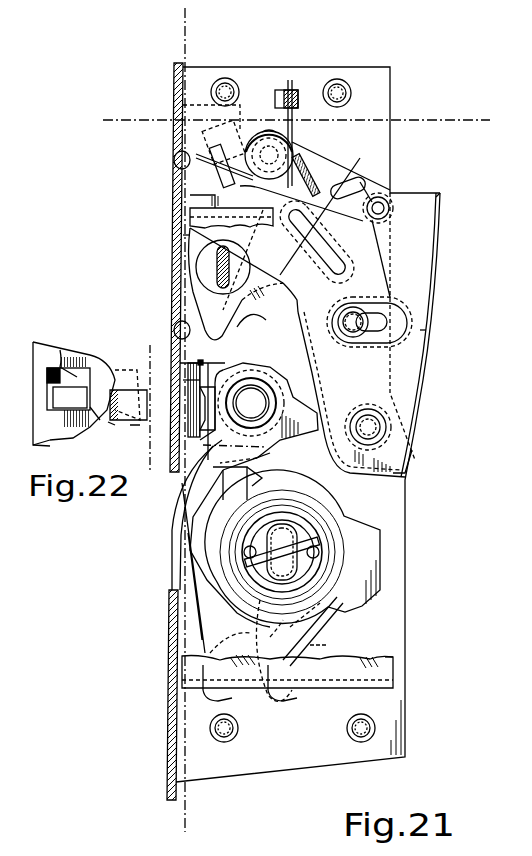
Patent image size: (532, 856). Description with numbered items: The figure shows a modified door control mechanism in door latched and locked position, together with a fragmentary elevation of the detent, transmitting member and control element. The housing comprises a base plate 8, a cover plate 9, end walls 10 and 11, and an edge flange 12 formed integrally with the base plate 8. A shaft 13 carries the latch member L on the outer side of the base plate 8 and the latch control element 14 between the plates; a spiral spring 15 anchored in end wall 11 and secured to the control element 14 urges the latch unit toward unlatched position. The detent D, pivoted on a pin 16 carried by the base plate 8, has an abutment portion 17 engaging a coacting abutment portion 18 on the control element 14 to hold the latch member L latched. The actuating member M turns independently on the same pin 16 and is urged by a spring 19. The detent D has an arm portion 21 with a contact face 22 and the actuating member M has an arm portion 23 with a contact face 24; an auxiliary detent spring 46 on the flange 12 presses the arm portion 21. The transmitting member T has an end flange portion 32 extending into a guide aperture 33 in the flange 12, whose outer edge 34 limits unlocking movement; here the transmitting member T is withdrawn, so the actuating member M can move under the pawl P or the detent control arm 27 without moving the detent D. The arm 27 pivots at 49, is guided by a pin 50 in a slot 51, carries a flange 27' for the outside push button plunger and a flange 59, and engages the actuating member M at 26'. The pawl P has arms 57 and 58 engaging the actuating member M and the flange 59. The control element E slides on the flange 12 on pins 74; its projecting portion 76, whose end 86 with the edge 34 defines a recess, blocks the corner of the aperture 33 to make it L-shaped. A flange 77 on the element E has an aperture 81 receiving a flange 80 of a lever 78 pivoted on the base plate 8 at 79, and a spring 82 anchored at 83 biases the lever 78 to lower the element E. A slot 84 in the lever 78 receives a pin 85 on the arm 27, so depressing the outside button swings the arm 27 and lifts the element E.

In FIG. 21, the base plate 8 is at (372, 78).
In FIG. 22, the base plate 8 is at (33, 352).
In FIG. 21, the cover plate 9 is at (388, 660).
In FIG. 21, the end wall 10 is at (231, 209).
In FIG. 21, the end wall 11 is at (332, 690).
In FIG. 21, the edge wall or flange 12 is at (171, 712).
In FIG. 22, the edge wall or flange 12 is at (110, 372).
In FIG. 21, the shaft 13 is at (292, 528).
In FIG. 21, the latch control element 14 is at (213, 573).
In FIG. 21, the spiral spring 15 is at (344, 518).
In FIG. 21, the pin 16 is at (262, 397).
In FIG. 21, the abutment portion 17 is at (230, 486).
In FIG. 21, the abutment portion 18 is at (259, 475).
In FIG. 21, the spring 19 is at (170, 591).
In FIG. 21, the arm portion 21 is at (175, 382).
In FIG. 22, the arm portion 21 is at (52, 380).
In FIG. 21, the contact face 22 is at (160, 345).
In FIG. 22, the contact face 22 is at (55, 398).
In FIG. 21, the arm portion 23 is at (185, 8).
In FIG. 21, the contact face 24 is at (105, 120).
In FIG. 21, the engagement point 26' is at (351, 394).
In FIG. 21, the detent control arm 27 is at (439, 305).
In FIG. 21, the flange 27' is at (454, 209).
In FIG. 22, the end flange portion 32 is at (94, 428).
In FIG. 22, the guide aperture 33 is at (68, 438).
In FIG. 22, the outer edge 34 is at (42, 444).
In FIG. 21, the auxiliary detent spring 46 is at (176, 393).
In FIG. 21, the pivotal support 49 is at (370, 420).
In FIG. 21, the pin 50 is at (353, 315).
In FIG. 21, the slot 51 is at (378, 315).
In FIG. 21, the arm 57 is at (245, 321).
In FIG. 21, the arm 58 is at (292, 234).
In FIG. 21, the flange 59 is at (312, 286).
In FIG. 21, the pins 74 is at (174, 160).
In FIG. 21, the projecting portion 76 is at (183, 408).
In FIG. 22, the projecting portion 76 is at (88, 358).
In FIG. 21, the flange 77 is at (190, 212).
In FIG. 21, the lever 78 is at (322, 146).
In FIG. 21, the pivot 79 is at (266, 130).
In FIG. 21, the flange 80 is at (200, 192).
In FIG. 21, the aperture 81 is at (212, 178).
In FIG. 21, the spring 82 is at (294, 130).
In FIG. 21, the anchor 83 is at (290, 85).
In FIG. 21, the slot 84 is at (351, 184).
In FIG. 21, the pin 85 is at (388, 203).
In FIG. 22, the end 86 is at (64, 350).
In FIG. 21, the transmitting member control element E is at (176, 240).
In FIG. 21, the pawl P is at (200, 280).
In FIG. 21, the detent D is at (230, 409).
In FIG. 21, the actuating member M is at (264, 464).
In FIG. 22, the transmitting member T is at (126, 417).
In FIG. 21, the latch member L is at (325, 645).